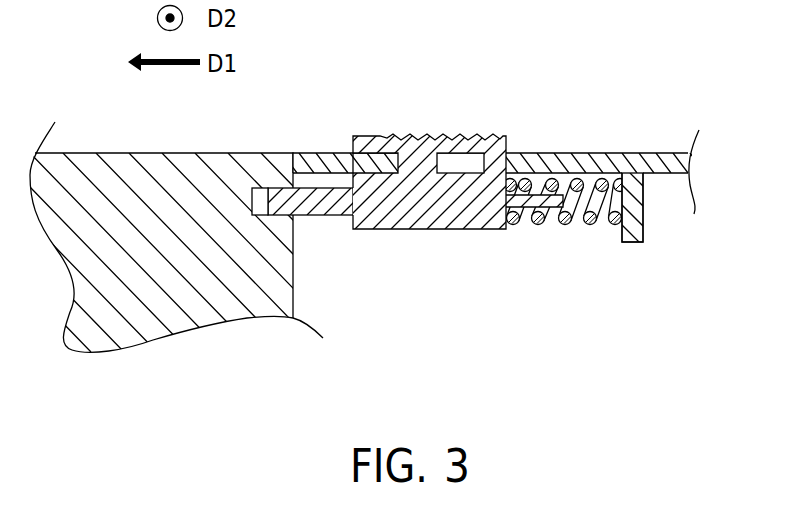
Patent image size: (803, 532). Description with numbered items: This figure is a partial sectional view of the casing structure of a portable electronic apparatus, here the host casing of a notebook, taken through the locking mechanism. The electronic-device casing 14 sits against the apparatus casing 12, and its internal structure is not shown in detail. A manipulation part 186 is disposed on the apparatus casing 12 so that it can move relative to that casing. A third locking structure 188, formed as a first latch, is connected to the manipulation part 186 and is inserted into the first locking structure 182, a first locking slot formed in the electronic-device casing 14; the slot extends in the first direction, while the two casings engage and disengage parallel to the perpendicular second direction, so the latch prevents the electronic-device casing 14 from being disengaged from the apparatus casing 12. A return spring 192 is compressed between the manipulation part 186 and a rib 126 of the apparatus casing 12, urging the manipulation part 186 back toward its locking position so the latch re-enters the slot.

The electronic-device casing 14 is at (151, 160).
The apparatus casing 12 is at (610, 158).
The manipulation part 186 is at (421, 141).
The third locking structure 188 is at (318, 213).
The first locking structure 182 is at (262, 217).
The return spring 192 is at (560, 226).
The rib 126 is at (630, 240).